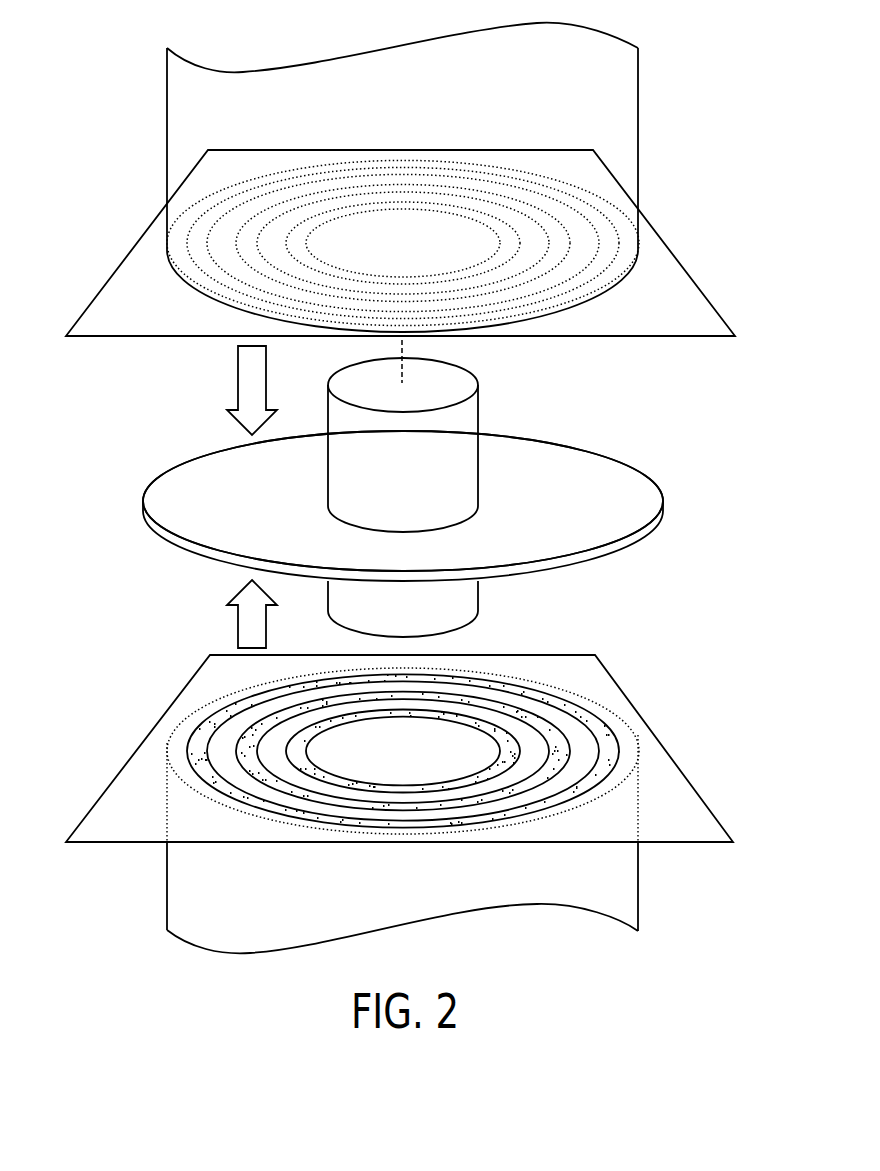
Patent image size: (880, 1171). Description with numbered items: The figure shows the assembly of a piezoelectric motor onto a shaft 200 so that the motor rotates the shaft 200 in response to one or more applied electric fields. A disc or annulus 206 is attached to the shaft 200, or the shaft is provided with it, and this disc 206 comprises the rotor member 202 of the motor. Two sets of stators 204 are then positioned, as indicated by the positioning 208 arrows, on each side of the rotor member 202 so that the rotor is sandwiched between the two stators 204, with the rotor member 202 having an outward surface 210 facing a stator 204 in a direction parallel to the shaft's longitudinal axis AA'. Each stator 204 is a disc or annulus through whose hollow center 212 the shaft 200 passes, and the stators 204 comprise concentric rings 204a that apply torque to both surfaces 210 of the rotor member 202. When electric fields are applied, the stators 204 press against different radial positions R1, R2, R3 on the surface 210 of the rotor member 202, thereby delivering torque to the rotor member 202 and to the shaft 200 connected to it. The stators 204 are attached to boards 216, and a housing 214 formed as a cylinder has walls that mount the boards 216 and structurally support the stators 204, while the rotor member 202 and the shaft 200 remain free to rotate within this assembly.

The shaft 200 is at (468, 420).
The rotor member 202 is at (662, 513).
The stators 204 is at (590, 283).
The concentric rings 204a is at (605, 740).
The disc or annulus 206 is at (132, 501).
The positioning 208 is at (252, 379).
The outward surface 210 is at (599, 482).
The hollow center 212 is at (366, 237).
The housing 214 is at (638, 68).
The boards 216 is at (575, 163).
The longitudinal axis AA' is at (351, 361).
The radial position R1 is at (298, 496).
The radial position R2 is at (248, 494).
The radial position R3 is at (198, 494).